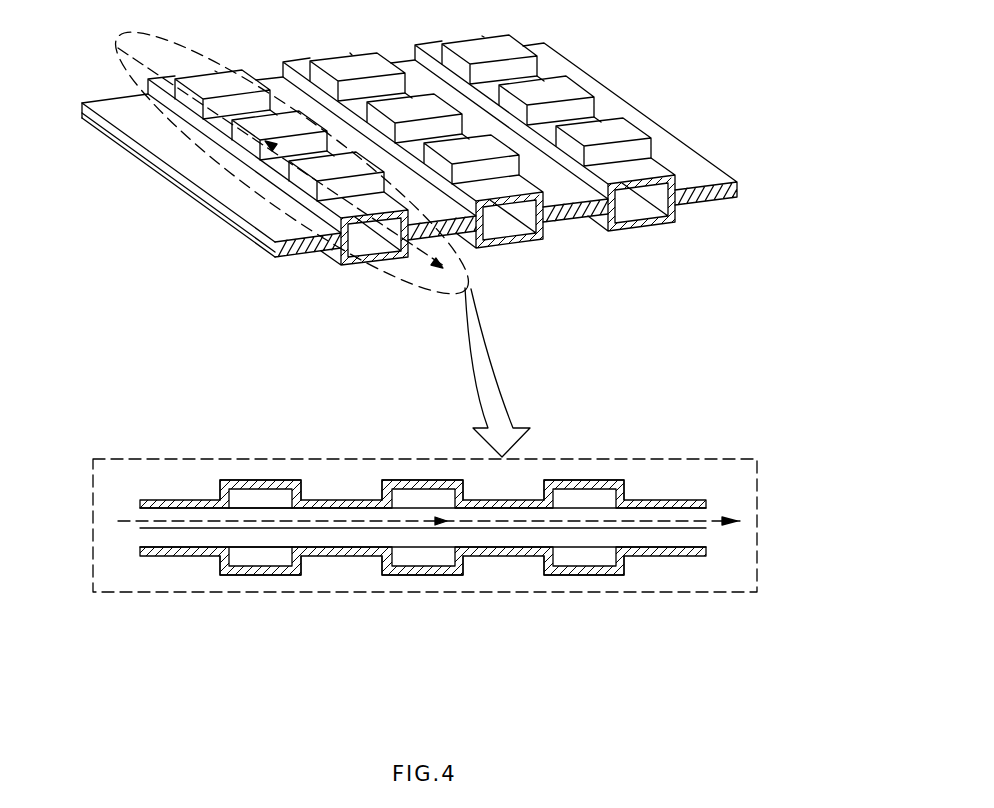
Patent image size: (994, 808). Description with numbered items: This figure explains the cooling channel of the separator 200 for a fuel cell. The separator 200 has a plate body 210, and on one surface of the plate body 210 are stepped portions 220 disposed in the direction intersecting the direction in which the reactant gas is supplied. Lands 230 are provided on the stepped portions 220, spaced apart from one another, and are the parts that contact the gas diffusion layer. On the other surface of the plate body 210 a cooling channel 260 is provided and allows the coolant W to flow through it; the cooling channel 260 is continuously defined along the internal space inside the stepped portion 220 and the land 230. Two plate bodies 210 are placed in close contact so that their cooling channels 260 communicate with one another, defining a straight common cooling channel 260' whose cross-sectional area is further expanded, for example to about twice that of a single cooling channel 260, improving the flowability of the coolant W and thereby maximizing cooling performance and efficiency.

The separator 200 is at (700, 137).
The plate body 210 is at (264, 217).
The stepped portion 220 is at (270, 170).
The land 230 is at (237, 135).
The cooling channel 260 is at (423, 529).
The common cooling channel 260' is at (258, 573).
The coolant W is at (393, 237).